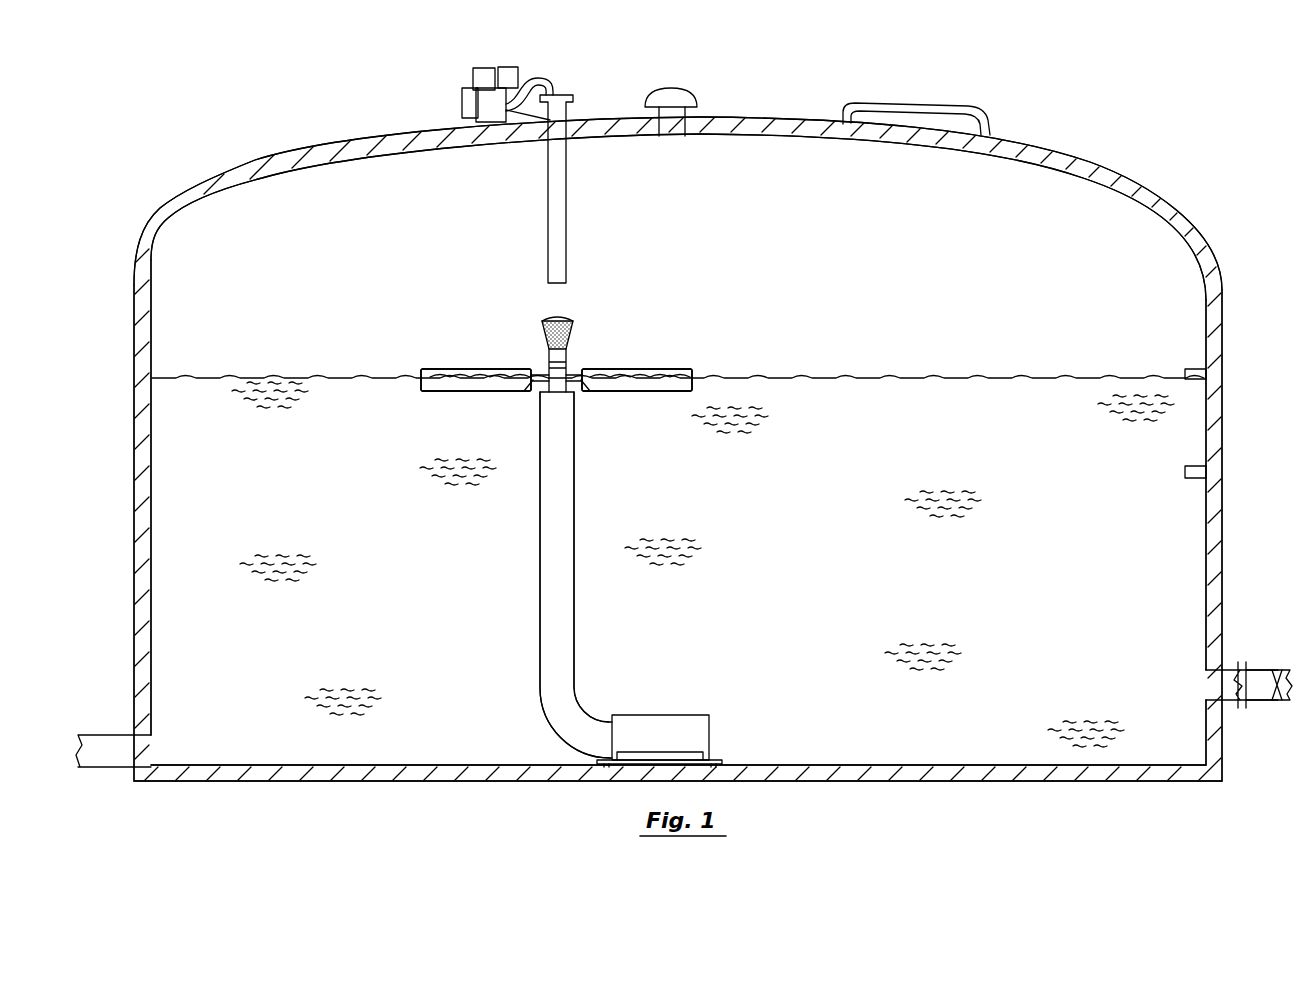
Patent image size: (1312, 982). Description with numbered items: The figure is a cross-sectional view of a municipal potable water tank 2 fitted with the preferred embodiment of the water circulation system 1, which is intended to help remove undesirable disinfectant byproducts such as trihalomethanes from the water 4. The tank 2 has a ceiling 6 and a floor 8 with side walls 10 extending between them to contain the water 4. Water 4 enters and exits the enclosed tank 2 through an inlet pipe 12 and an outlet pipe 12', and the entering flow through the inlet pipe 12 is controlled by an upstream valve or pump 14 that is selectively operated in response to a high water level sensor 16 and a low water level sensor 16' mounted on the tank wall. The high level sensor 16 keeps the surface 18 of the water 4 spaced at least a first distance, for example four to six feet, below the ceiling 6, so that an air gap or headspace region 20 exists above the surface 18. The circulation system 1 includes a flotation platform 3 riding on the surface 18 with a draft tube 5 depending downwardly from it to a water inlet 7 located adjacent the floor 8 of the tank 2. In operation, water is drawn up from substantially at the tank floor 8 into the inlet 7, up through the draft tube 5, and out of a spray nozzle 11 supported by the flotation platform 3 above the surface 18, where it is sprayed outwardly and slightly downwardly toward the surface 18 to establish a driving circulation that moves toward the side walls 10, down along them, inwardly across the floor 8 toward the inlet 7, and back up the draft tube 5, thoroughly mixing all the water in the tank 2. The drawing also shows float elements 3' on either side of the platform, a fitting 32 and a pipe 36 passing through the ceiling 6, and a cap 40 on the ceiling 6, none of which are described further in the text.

The water circulation system 1 is at (672, 337).
The tank 2 is at (1036, 145).
The flotation platform 3 is at (534, 352).
The float 3' is at (556, 352).
The water 4 is at (371, 571).
The draft tube 5 is at (540, 547).
The ceiling 6 is at (700, 140).
The water inlet 7 is at (654, 758).
The floor 8 is at (833, 765).
The side walls 10 is at (153, 460).
The spray nozzle 11 is at (574, 319).
The inlet pipe 12 is at (1249, 663).
The outlet pipe 12' is at (112, 722).
The upstream valve or pump 14 is at (1262, 700).
The high water level sensor 16 is at (1166, 352).
The low water level sensor 16' is at (1166, 458).
The surface of the water 18 is at (962, 367).
The headspace region 20 is at (353, 300).
The valve fitting 32 is at (464, 75).
The vent pipe 36 is at (568, 202).
The cap 40 is at (697, 100).